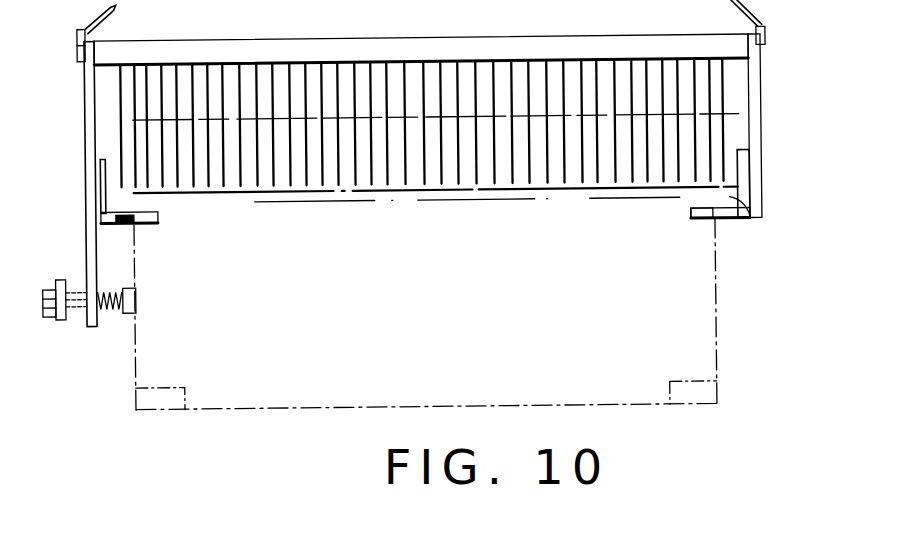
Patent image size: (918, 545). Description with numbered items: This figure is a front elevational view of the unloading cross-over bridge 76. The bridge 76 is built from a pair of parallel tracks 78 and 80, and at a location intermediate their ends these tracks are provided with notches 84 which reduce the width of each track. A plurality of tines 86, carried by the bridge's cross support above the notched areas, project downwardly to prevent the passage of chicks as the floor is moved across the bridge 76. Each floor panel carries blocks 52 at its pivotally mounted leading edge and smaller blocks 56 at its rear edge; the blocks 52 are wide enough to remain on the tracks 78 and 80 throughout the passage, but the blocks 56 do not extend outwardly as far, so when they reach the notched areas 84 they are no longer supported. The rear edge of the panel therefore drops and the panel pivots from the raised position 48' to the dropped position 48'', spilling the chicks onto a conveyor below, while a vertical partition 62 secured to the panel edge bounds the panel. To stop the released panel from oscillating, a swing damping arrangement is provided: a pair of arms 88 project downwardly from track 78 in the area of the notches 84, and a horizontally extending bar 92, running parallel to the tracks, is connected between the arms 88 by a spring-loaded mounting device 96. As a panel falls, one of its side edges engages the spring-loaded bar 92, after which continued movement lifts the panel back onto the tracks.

The vertical partition 62 is at (412, 115).
The unloading cross-over bridge 76 is at (770, 87).
The track 80 is at (747, 175).
The block 52 is at (83, 209).
The panel position 48' is at (468, 227).
The panel position 48'' is at (482, 314).
The notch 84 is at (134, 219).
The block 56 is at (160, 209).
The tine 86 is at (464, 172).
The track 78 is at (96, 181).
The arm 88 is at (89, 250).
The bar 92 is at (137, 299).
The spring-loaded mounting device 96 is at (112, 315).